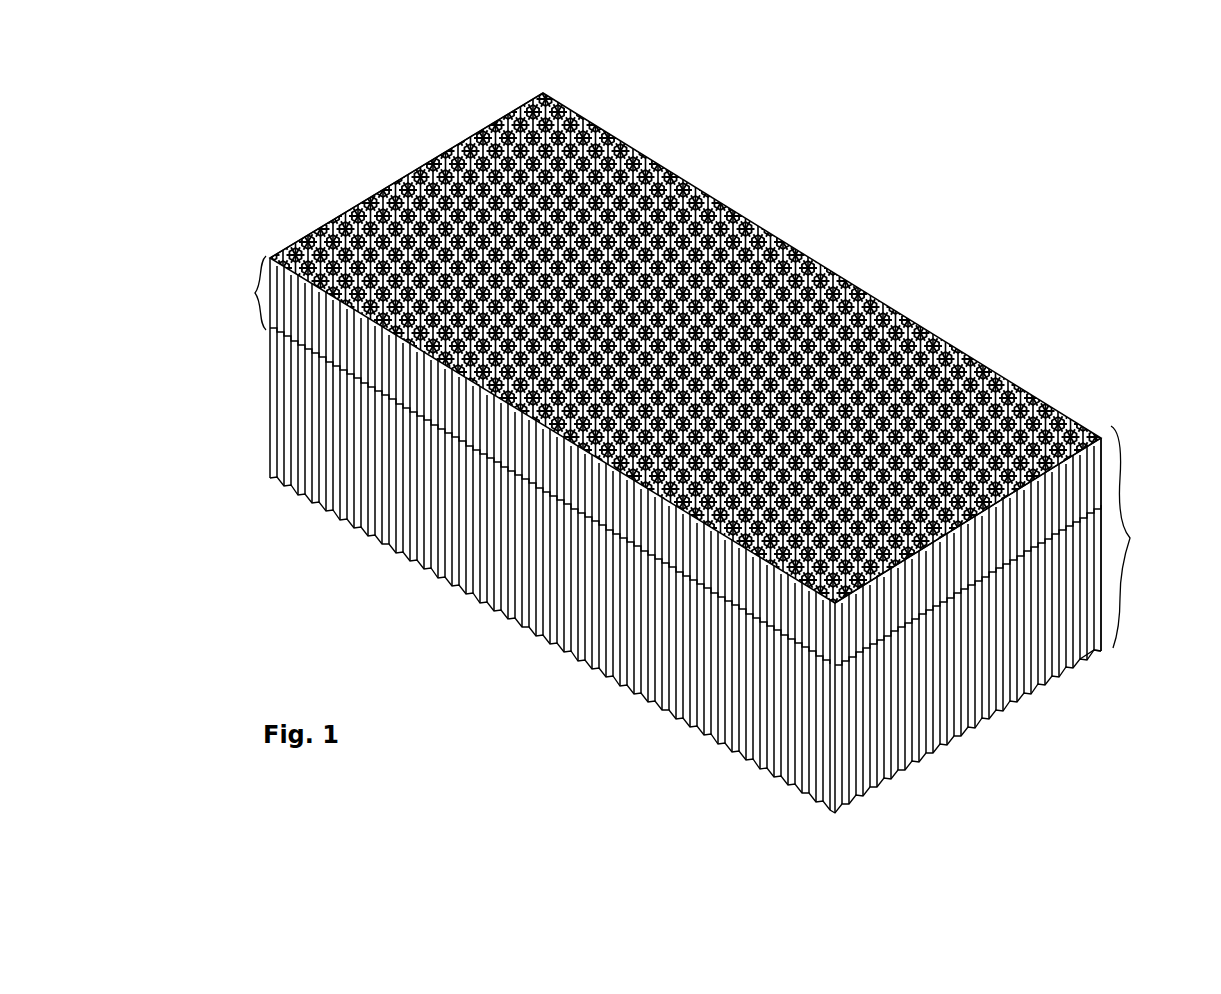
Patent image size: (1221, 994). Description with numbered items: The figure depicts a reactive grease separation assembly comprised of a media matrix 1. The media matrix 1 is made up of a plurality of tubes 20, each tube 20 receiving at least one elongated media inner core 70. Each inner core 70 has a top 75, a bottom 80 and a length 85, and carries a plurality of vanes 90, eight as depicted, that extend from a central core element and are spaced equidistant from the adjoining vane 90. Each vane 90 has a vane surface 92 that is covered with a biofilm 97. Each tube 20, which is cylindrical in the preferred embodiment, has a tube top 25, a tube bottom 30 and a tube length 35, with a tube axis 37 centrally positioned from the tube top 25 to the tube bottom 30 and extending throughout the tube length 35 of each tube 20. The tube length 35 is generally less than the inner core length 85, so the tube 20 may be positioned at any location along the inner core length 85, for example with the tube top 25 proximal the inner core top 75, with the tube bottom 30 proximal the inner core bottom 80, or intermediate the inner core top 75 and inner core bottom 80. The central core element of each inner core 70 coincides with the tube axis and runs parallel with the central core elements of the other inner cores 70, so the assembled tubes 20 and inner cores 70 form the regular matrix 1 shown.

The media matrix 1 is at (968, 263).
The tube 20 is at (368, 190).
The tube top 25 is at (270, 250).
The tube bottom 30 is at (262, 330).
The tube length 35 is at (250, 270).
The tube axis 37 is at (775, 525).
The inner core 70 is at (470, 115).
The inner core top 75 is at (1078, 428).
The inner core bottom 80 is at (1087, 642).
The inner core length 85 is at (1117, 560).
The vane 90 is at (780, 772).
The vane surface 92 is at (818, 763).
The biofilm 97 is at (1097, 445).